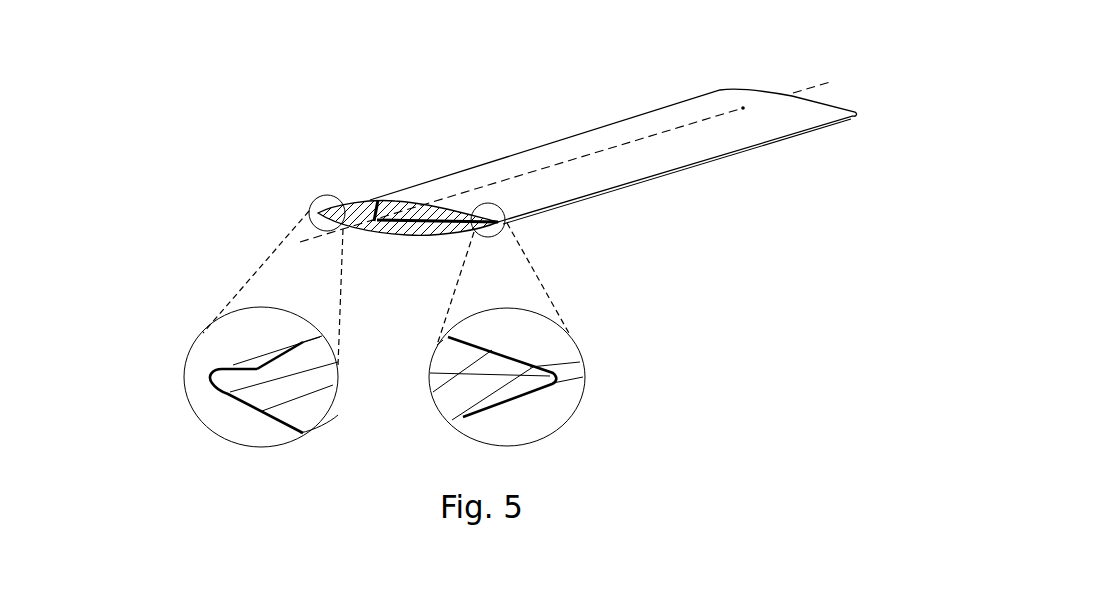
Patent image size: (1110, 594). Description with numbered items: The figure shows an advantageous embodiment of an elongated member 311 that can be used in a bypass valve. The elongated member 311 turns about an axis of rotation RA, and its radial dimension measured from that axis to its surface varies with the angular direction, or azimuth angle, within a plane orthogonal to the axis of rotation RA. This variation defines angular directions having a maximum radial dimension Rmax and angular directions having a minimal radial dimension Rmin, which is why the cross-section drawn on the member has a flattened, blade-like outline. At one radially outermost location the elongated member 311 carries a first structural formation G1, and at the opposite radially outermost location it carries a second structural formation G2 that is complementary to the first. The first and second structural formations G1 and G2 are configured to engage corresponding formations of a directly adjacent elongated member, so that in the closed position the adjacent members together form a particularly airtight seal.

The elongated member 311 is at (573, 146).
The axis of rotation RA is at (815, 82).
The maximum radial dimension Rmax is at (408, 220).
The minimal radial dimension Rmin is at (378, 201).
The first structural formation G1 is at (510, 387).
The second structural formation G2 is at (254, 370).